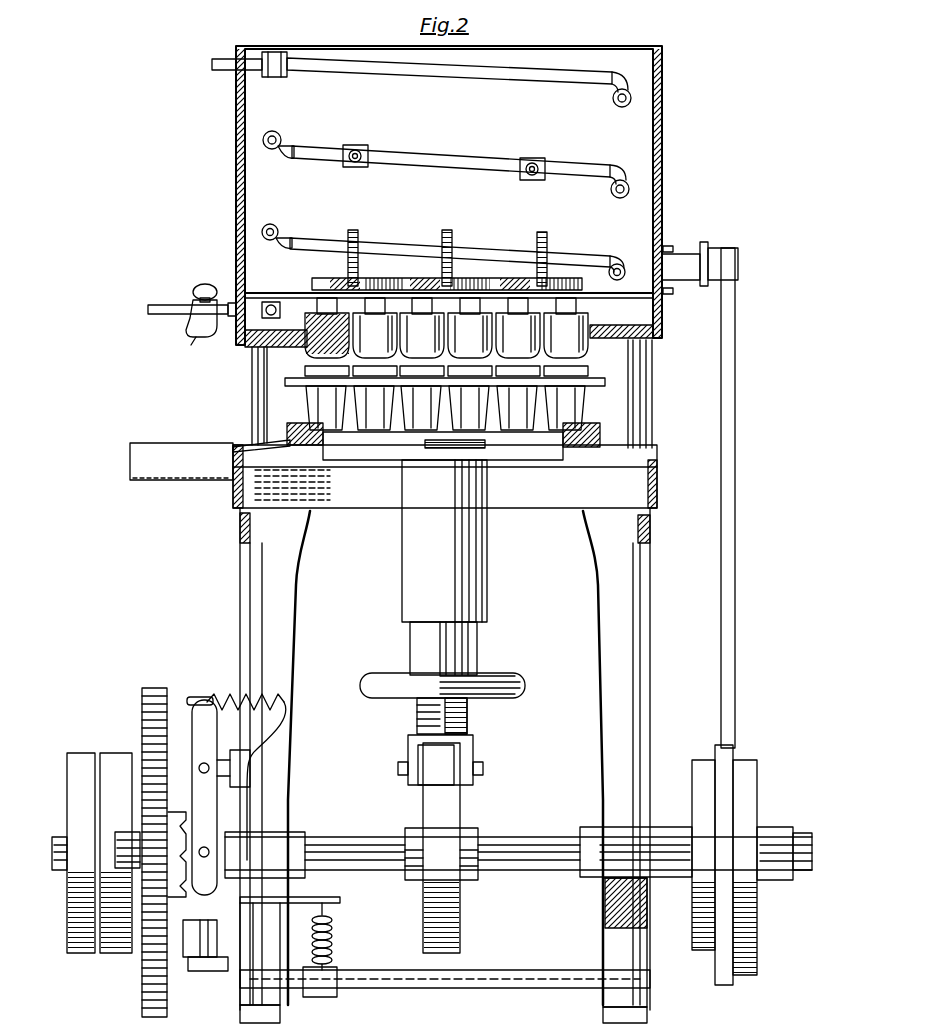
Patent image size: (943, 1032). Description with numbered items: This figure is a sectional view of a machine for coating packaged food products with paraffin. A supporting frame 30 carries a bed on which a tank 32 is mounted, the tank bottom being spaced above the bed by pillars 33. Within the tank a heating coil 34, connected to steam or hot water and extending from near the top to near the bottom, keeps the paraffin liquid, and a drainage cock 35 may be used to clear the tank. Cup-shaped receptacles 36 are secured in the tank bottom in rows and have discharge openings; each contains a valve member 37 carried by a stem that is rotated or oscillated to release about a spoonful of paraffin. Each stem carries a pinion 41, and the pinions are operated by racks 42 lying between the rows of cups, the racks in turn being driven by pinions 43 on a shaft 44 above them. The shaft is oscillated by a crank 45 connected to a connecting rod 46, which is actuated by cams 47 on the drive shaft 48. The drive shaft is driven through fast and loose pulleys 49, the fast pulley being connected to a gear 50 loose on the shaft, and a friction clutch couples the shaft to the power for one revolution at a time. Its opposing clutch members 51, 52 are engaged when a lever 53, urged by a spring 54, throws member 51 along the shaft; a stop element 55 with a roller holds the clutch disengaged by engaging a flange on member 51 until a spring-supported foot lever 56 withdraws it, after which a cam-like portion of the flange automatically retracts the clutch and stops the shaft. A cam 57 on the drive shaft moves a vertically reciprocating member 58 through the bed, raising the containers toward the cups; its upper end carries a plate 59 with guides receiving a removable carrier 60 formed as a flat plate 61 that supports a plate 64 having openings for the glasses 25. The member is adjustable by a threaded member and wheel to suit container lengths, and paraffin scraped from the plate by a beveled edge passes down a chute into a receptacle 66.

The glass 25 is at (446, 398).
The supporting frame 30 is at (625, 642).
The tank 32 is at (247, 116).
The pillars 33 is at (250, 402).
The heating coil 34 is at (445, 153).
The drainage cock 35 is at (192, 325).
The cup-shaped receptacle 36 is at (316, 324).
The valve member 37 is at (360, 495).
The pinion 41 is at (598, 265).
The rack 42 is at (450, 268).
The pinion 43 is at (358, 240).
The shaft 44 is at (470, 276).
The crank 45 is at (690, 288).
The connecting rod 46 is at (736, 578).
The cam 47 is at (740, 787).
The drive shaft 48 is at (540, 872).
The fast and loose pulleys 49 is at (96, 839).
The gear 50 is at (152, 688).
The clutch member 51 is at (218, 812).
The clutch member 52 is at (170, 812).
The lever 53 is at (200, 697).
The spring 54 is at (267, 698).
The stop element 55 is at (196, 935).
The foot lever 56 is at (335, 968).
The cam 57 is at (462, 800).
The vertically reciprocating member 58 is at (482, 642).
The plate 59 is at (590, 425).
The removable carrier 60 is at (425, 441).
The flat plate 61 is at (480, 452).
The plate 64 is at (308, 387).
The receptacle 66 is at (210, 460).